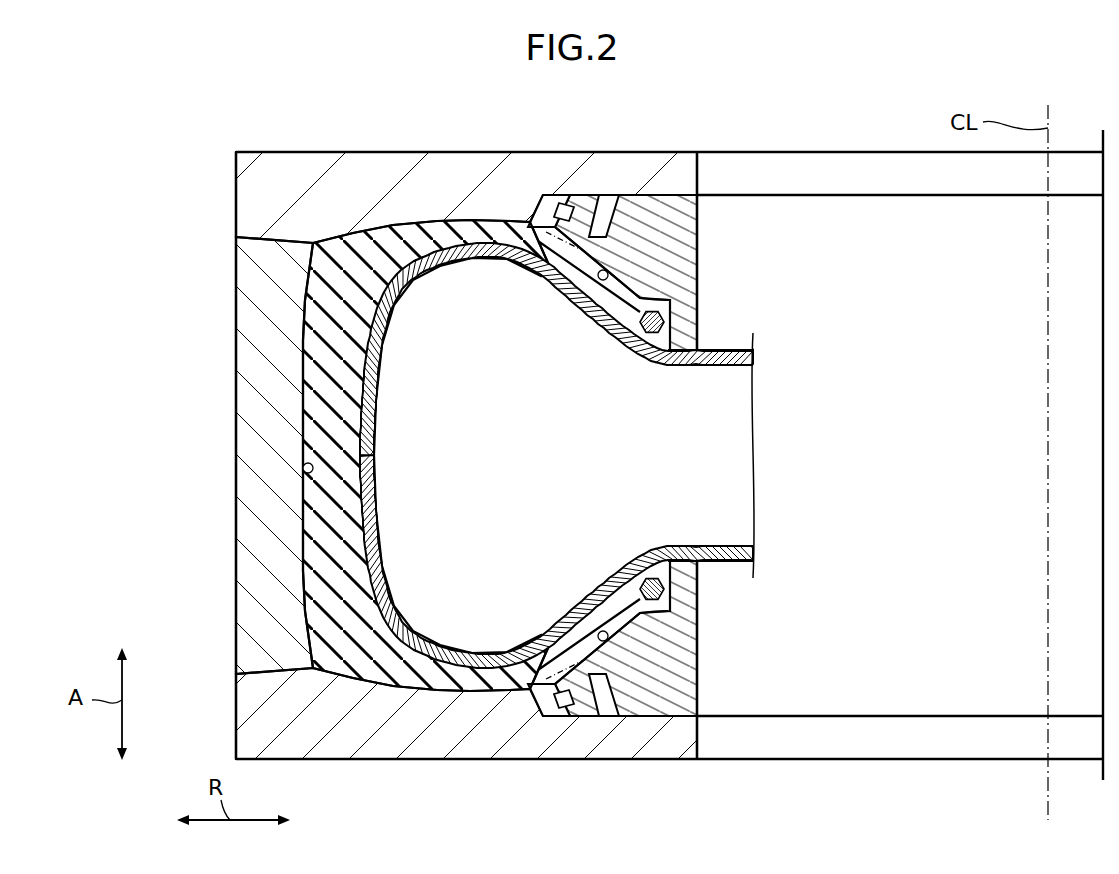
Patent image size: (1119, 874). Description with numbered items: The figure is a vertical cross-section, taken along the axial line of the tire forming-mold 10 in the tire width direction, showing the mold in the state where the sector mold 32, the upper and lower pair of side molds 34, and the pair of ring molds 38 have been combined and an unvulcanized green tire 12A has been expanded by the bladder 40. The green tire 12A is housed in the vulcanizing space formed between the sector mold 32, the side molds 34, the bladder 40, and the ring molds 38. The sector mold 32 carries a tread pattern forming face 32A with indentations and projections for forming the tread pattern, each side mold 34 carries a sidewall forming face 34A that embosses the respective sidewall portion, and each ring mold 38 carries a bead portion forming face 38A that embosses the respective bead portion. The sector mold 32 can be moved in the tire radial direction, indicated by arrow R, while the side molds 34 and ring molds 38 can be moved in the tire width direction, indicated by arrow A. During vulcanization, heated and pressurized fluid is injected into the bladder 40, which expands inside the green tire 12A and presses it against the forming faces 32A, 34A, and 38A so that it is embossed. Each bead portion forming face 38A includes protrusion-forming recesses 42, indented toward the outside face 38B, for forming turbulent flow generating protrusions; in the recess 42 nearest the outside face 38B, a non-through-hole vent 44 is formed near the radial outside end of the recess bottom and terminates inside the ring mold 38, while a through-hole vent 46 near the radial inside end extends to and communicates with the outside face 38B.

The tire forming-mold 10 is at (831, 135).
The unvulcanized green tire 12A is at (380, 220).
The sector mold 32 is at (228, 385).
The tread pattern forming face 32A is at (303, 475).
The side mold 34 is at (228, 213).
The sidewall forming face 34A is at (440, 220).
The ring mold 38 is at (705, 272).
The bead portion forming face 38A is at (608, 270).
The outside face 38B is at (598, 195).
The bladder 40 is at (723, 342).
The protrusion-forming recess 42 is at (586, 228).
The non-through-hole vent 44 is at (560, 196).
The through-hole vent 46 is at (615, 200).